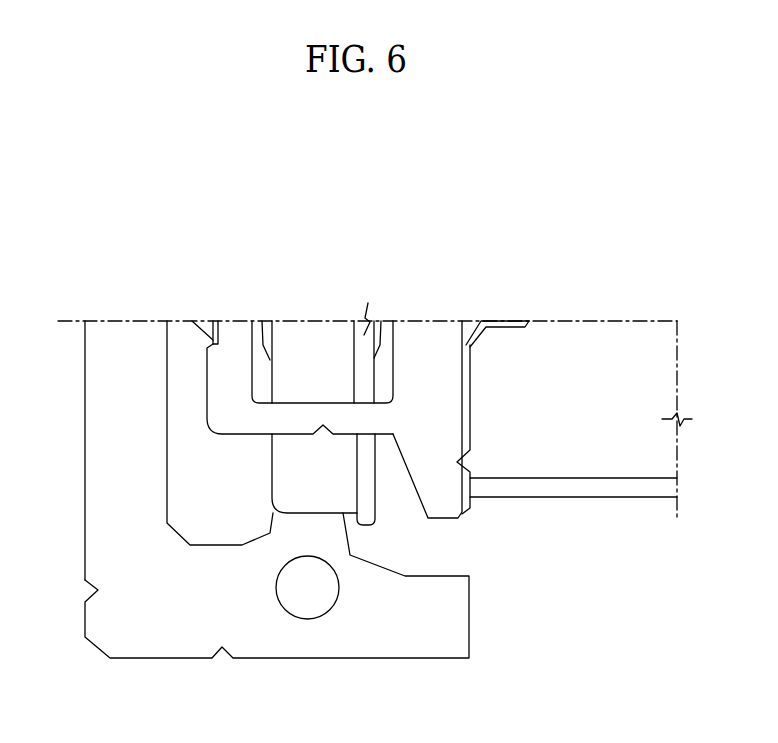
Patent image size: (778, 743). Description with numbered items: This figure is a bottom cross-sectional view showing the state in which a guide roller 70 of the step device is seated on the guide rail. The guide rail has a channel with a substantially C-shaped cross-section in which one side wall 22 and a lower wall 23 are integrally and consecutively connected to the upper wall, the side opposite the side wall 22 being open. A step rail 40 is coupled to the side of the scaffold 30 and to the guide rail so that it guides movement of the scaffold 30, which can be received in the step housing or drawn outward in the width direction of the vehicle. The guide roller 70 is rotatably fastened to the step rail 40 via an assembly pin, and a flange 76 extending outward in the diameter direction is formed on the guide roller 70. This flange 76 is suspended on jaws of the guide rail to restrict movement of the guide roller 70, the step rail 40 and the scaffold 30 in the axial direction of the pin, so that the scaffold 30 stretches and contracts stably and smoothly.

The side wall 22 is at (85, 448).
The lower wall 23 is at (352, 658).
The scaffold 30 is at (609, 335).
The step rail 40 is at (240, 432).
The guide roller 70 is at (313, 337).
The flange 76 is at (377, 523).